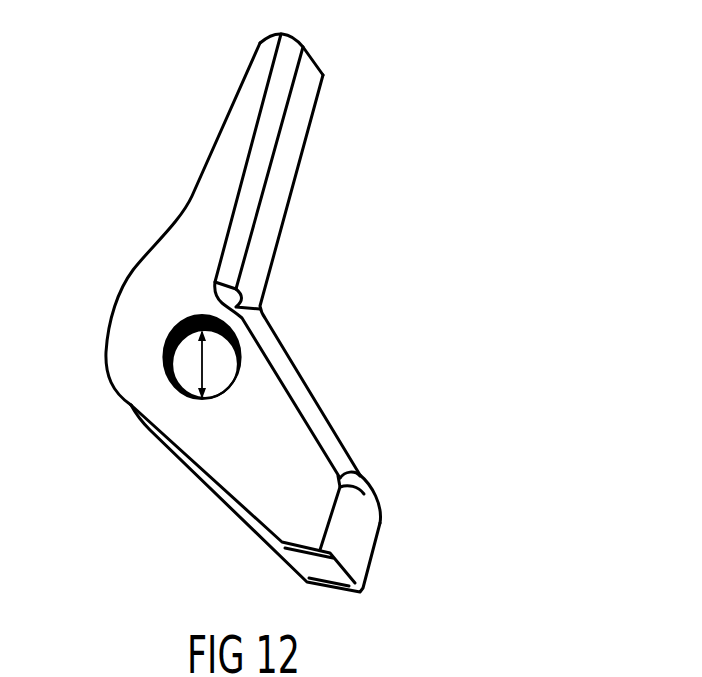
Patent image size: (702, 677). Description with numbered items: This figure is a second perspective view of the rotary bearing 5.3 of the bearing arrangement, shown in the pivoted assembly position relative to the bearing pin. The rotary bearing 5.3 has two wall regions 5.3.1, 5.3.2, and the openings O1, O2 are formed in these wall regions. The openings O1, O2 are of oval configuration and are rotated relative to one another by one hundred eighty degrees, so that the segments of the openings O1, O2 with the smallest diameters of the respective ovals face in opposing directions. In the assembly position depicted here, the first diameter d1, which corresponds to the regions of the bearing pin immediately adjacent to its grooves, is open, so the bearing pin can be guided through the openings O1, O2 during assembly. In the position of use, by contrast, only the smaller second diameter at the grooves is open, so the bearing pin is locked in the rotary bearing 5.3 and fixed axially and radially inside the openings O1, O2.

The rotary bearing 5.3 is at (160, 113).
The wall region 5.3.2 is at (210, 196).
The wall region 5.3.1 is at (182, 464).
The opening O1 is at (182, 377).
The opening O2 is at (230, 357).
The first diameter d1 is at (200, 348).